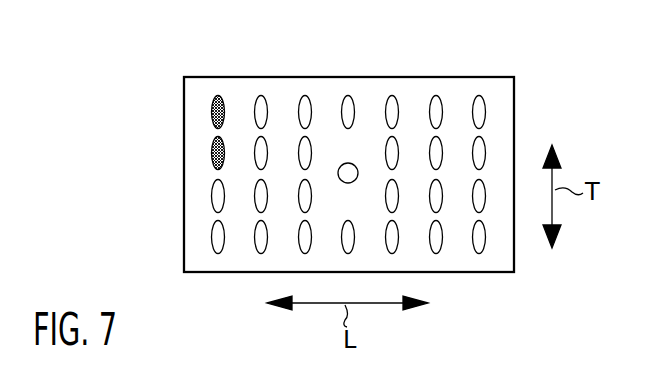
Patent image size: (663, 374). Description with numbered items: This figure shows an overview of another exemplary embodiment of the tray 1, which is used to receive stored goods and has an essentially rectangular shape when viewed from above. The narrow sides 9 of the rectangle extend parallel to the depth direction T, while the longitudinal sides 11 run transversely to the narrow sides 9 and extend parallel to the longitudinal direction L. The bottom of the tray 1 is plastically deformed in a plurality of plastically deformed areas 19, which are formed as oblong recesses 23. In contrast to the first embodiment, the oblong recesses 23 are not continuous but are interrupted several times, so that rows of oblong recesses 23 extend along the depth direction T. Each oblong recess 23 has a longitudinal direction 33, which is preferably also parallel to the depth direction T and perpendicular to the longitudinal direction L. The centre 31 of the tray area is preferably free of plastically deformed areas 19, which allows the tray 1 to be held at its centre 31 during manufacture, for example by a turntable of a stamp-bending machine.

The tray 1 is at (301, 45).
The narrow sides 9 is at (321, 177).
The longitudinal sides 11 is at (450, 77).
The plastically deformed area 19 is at (286, 141).
The oblong recesses 23 is at (219, 99).
The centre 31 is at (350, 183).
The longitudinal directions 33 is at (211, 110).